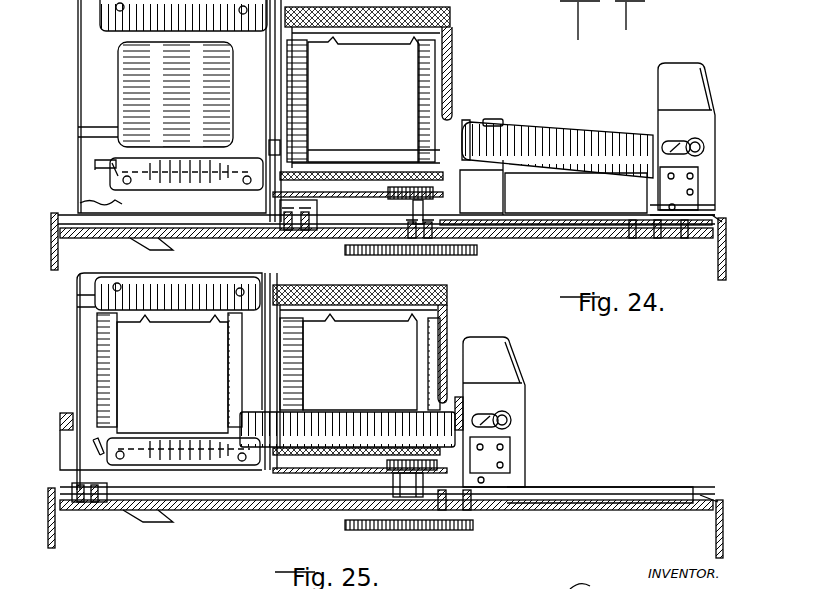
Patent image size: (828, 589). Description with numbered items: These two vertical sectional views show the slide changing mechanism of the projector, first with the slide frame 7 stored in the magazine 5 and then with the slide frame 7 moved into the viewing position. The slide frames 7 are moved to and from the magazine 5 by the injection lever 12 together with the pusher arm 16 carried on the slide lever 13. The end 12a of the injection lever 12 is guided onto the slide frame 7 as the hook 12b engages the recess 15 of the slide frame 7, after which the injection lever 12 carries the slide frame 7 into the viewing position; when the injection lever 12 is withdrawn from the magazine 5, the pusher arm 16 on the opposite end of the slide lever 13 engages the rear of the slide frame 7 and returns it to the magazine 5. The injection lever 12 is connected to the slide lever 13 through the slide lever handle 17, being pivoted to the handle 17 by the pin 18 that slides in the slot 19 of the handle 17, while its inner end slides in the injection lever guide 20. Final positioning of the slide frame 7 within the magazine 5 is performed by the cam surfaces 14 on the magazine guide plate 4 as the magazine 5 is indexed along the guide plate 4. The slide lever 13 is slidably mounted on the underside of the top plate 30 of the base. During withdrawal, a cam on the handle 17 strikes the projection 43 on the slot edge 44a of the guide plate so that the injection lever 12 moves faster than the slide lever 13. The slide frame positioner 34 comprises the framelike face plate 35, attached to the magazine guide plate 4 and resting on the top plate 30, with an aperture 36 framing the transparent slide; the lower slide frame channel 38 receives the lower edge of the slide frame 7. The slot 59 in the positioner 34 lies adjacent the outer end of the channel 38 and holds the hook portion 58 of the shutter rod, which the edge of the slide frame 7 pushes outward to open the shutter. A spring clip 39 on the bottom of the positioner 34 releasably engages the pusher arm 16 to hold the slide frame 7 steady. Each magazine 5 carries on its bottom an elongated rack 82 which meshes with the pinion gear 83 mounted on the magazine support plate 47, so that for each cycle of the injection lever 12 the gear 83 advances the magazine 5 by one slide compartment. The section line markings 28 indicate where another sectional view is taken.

In FIG. 25, the magazine guide plate 4 is at (287, 282).
In FIG. 24, the magazine 5 is at (443, 35).
In FIG. 25, the magazine 5 is at (443, 313).
In FIG. 24, the slide frame 7 is at (436, 70).
In FIG. 25, the slide frame 7 is at (106, 377).
In FIG. 24, the injection lever 12 is at (554, 136).
In FIG. 25, the injection lever 12 is at (350, 418).
In FIG. 24, the end of injection lever 12a is at (464, 122).
In FIG. 24, the hook 12b is at (468, 165).
In FIG. 25, the hook 12b is at (210, 480).
In FIG. 24, the slide lever 13 is at (512, 232).
In FIG. 25, the slide lever 13 is at (346, 500).
In FIG. 24, the cam surfaces 14 is at (283, 100).
In FIG. 25, the cam surfaces 14 is at (283, 380).
In FIG. 24, the recess 15 is at (432, 145).
In FIG. 24, the pusher arm 16 is at (282, 148).
In FIG. 25, the pusher arm 16 is at (60, 426).
In FIG. 24, the slide lever handle 17 is at (707, 123).
In FIG. 25, the slide lever handle 17 is at (510, 402).
In FIG. 24, the pin 18 is at (705, 148).
In FIG. 25, the pin 18 is at (513, 420).
In FIG. 24, the slot 19 is at (663, 143).
In FIG. 25, the slot 19 is at (485, 413).
In FIG. 24, the injection lever guide 20 is at (487, 121).
In FIG. 24, the section line 28 is at (566, 199).
In FIG. 24, the top plate 30 is at (62, 215).
In FIG. 25, the top plate 30 is at (385, 522).
In FIG. 24, the slide frame positioner 34 is at (72, 86).
In FIG. 25, the slide frame positioner 34 is at (77, 346).
In FIG. 24, the face plate 35 is at (105, 93).
In FIG. 24, the aperture 36 is at (168, 46).
In FIG. 24, the lower slide frame channel 38 is at (163, 160).
In FIG. 25, the lower slide frame channel 38 is at (183, 451).
In FIG. 24, the spring clip 39 is at (122, 203).
In FIG. 25, the spring clip 39 is at (105, 470).
In FIG. 24, the projection 43 is at (656, 213).
In FIG. 24, the slot edge 44a is at (514, 216).
In FIG. 24, the magazine support plate 47 is at (343, 198).
In FIG. 25, the magazine support plate 47 is at (330, 470).
In FIG. 24, the hook portion 58 is at (113, 176).
In FIG. 25, the hook portion 58 is at (94, 444).
In FIG. 24, the slot 59 is at (95, 160).
In FIG. 24, the rack 82 is at (452, 213).
In FIG. 25, the rack 82 is at (430, 465).
In FIG. 24, the pinion gear 83 is at (396, 199).
In FIG. 25, the pinion gear 83 is at (379, 459).